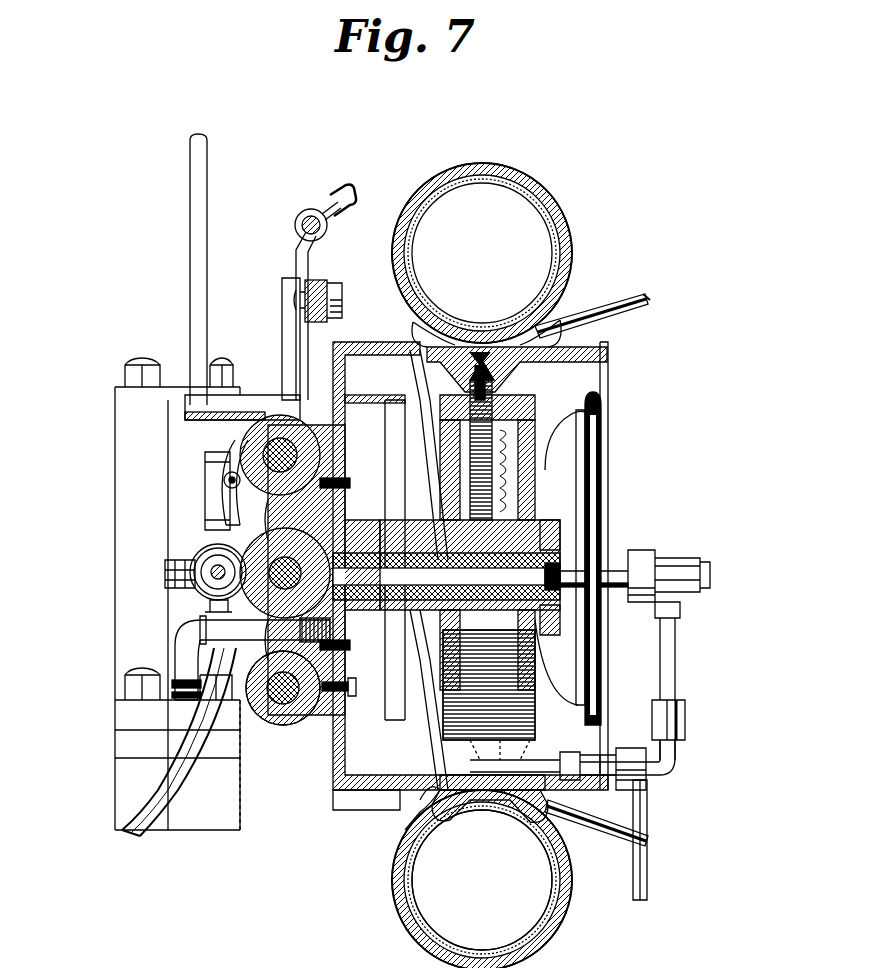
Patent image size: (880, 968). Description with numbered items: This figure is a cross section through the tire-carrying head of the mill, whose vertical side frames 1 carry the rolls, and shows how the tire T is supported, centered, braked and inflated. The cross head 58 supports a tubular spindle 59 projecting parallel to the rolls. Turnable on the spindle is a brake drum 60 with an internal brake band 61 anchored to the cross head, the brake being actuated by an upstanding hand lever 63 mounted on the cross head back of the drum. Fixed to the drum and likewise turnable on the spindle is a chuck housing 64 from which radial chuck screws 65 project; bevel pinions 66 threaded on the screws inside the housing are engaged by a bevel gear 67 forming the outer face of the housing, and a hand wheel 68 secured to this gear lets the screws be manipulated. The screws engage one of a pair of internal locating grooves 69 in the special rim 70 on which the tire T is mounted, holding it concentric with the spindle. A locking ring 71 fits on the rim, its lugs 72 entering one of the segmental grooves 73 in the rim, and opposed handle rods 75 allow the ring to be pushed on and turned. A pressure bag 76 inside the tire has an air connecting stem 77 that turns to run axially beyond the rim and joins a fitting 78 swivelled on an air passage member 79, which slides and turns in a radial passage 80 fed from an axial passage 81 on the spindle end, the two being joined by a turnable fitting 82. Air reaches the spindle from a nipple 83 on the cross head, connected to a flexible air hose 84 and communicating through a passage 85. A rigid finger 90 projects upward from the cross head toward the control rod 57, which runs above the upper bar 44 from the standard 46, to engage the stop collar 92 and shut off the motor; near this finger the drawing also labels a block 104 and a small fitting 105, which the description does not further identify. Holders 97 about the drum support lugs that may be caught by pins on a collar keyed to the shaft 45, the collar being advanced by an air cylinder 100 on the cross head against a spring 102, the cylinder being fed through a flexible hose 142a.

The vertical side frames 1 is at (135, 739).
The upper bar 44 is at (262, 418).
The shaft 45 is at (225, 520).
The standard 46 is at (205, 530).
The control rod 57 is at (308, 210).
The cross head 58 is at (292, 712).
The tubular spindle 59 is at (560, 535).
The brake drum 60 is at (365, 352).
The internal brake band 61 is at (362, 400).
The hand lever 63 is at (192, 215).
The chuck housing 64 is at (430, 796).
The chuck screws 65 is at (462, 380).
The bevel pinions 66 is at (530, 398).
The bevel gear 67 is at (512, 506).
The hand wheel 68 is at (602, 450).
The locating grooves 69 is at (478, 362).
The rim 70 is at (518, 345).
The locking ring 71 is at (540, 820).
The lugs 72 is at (510, 812).
The segmental grooves 73 is at (560, 322).
The handle rods 75 is at (648, 294).
The pressure bag 76 is at (410, 895).
The air connecting stem 77 is at (548, 780).
The fitting 78 is at (648, 786).
The air passage member 79 is at (684, 762).
The passage 80 is at (682, 644).
The passage 81 is at (612, 575).
The fitting 82 is at (678, 562).
The nipple 83 is at (230, 628).
The flexible air hose 84 is at (150, 806).
The passage 85 is at (352, 690).
The rigid finger 90 is at (296, 254).
The stop collar 92 is at (300, 222).
The holders 97 is at (345, 806).
The air cylinder 100 is at (190, 565).
The spring 102 is at (180, 586).
The block 104 is at (330, 288).
The fitting 105 is at (300, 296).
The flexible hose 142a is at (176, 782).
The tire T is at (395, 915).